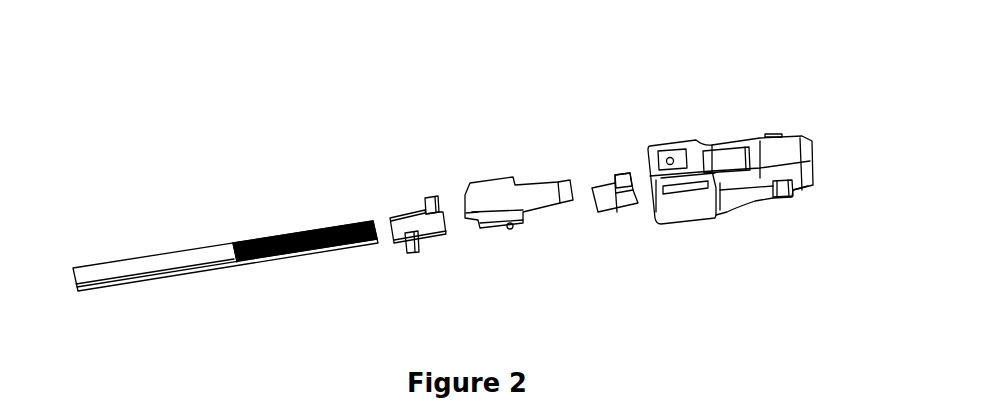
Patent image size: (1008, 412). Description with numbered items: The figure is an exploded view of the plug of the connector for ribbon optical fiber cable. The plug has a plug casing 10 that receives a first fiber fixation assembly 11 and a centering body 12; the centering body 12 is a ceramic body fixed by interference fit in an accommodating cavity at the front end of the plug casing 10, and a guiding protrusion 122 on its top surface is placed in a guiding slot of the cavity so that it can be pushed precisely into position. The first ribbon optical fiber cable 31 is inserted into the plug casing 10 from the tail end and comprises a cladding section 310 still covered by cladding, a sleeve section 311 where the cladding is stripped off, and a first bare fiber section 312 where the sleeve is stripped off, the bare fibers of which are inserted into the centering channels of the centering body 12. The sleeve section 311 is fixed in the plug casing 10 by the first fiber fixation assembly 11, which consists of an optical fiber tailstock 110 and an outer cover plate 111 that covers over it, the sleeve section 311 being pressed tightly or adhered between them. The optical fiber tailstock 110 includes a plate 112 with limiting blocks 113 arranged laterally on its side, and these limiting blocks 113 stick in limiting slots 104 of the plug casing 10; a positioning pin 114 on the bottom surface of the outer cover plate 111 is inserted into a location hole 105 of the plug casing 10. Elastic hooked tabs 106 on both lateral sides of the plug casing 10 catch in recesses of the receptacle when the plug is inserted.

The plug casing 10 is at (758, 220).
The limiting slots 104 is at (698, 163).
The location hole 105 is at (670, 158).
The elastic hooked tabs 106 is at (777, 193).
The first fiber fixation assembly 11 is at (530, 152).
The optical fiber tailstock 110 is at (423, 265).
The outer cover plate 111 is at (497, 207).
The plate 112 is at (408, 223).
The limiting blocks 113 is at (408, 249).
The positioning pin 114 is at (511, 229).
The centering body 12 is at (632, 228).
The guiding protrusion 122 is at (623, 177).
The first ribbon optical fiber cable 31 is at (187, 203).
The cladding section 310 is at (165, 265).
The sleeve section 311 is at (290, 257).
The first bare fiber section 312 is at (367, 222).